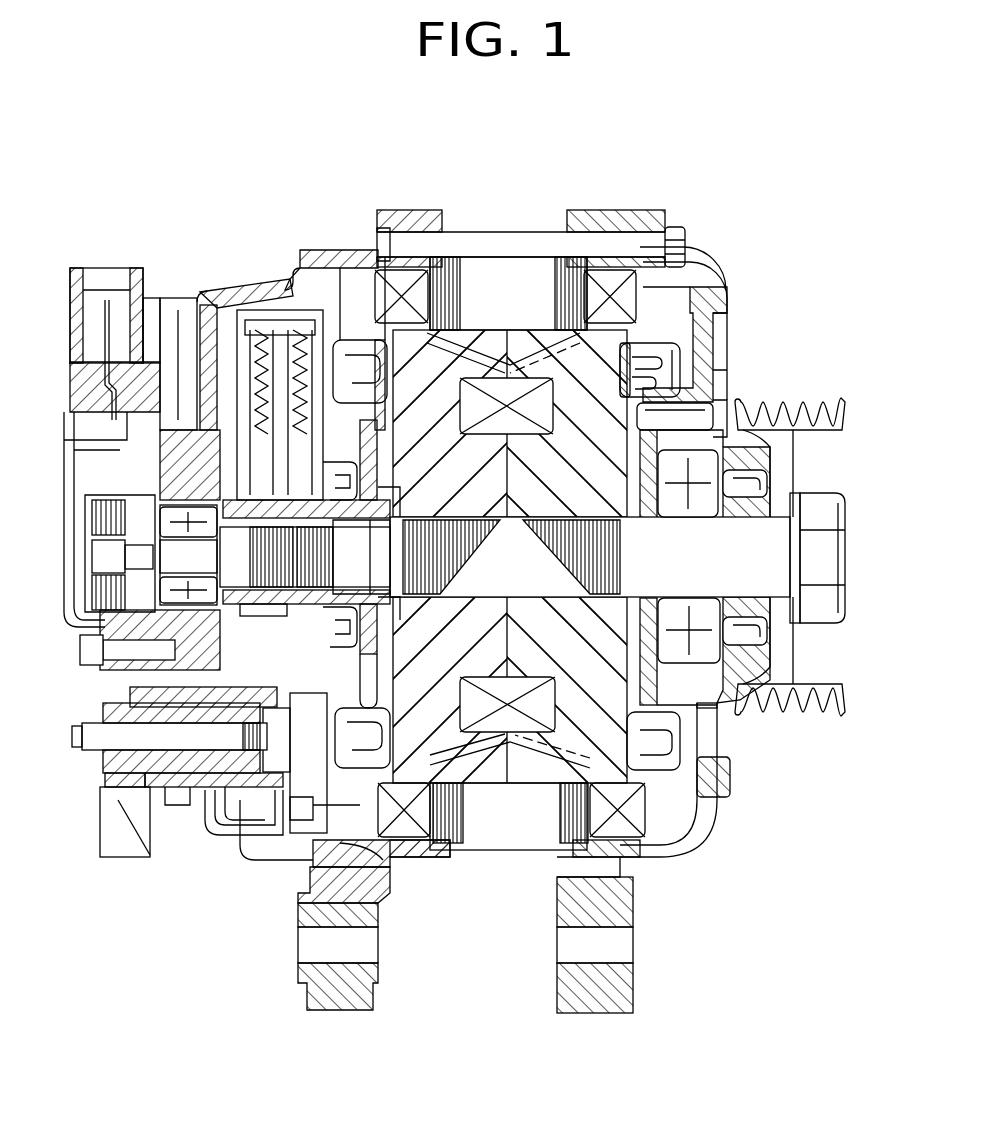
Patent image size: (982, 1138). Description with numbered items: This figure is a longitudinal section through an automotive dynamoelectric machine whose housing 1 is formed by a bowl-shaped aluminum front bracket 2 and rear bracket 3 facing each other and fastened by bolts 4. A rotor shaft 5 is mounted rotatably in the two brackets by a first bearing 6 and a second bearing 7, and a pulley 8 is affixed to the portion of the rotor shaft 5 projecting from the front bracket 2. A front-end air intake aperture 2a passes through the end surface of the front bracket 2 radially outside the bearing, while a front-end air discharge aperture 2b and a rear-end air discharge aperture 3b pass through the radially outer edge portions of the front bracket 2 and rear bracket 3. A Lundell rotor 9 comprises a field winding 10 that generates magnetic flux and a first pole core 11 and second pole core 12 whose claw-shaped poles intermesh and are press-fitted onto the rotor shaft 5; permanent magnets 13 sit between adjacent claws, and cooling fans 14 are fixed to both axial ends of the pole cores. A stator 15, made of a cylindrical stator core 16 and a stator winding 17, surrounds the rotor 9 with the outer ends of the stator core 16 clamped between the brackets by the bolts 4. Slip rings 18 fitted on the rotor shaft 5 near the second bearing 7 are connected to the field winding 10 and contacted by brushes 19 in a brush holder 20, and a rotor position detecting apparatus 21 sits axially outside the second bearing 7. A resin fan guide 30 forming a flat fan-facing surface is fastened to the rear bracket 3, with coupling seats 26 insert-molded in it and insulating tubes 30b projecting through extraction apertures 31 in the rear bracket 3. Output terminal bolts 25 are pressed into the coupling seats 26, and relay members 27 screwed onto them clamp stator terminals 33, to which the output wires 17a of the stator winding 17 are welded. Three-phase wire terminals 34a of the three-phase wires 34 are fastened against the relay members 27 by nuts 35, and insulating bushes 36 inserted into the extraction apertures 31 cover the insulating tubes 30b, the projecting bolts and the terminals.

The housing 1 is at (717, 536).
The front bracket 2 is at (705, 536).
The front-end air intake aperture 2a is at (720, 370).
The front-end air discharge aperture 2b is at (700, 262).
The rear bracket 3 is at (275, 556).
The rear-end air discharge aperture 3b is at (345, 258).
The bolt 4 is at (677, 225).
The rotor shaft 5 is at (775, 570).
The first bearing 6 is at (710, 465).
The second bearing 7 is at (165, 512).
The pulley 8 is at (810, 400).
The Lundell rotor 9 is at (505, 528).
The field winding 10 is at (510, 393).
The first pole core 11 is at (573, 363).
The second pole core 12 is at (420, 350).
The permanent magnet 13 is at (470, 770).
The cooling fan 14 is at (665, 360).
The stator 15 is at (492, 605).
The stator core 16 is at (493, 840).
The stator winding 17 is at (492, 612).
The output wire 17a is at (383, 860).
The slip ring 18 is at (255, 606).
The brush 19 is at (235, 327).
The brush holder 20 is at (273, 330).
The rotor position detecting apparatus 21 is at (85, 527).
The output terminal bolt 25 is at (82, 722).
The coupling seat 26 is at (253, 703).
The relay member 27 is at (163, 760).
The fan guide 30 is at (255, 774).
The insulating tube 30b is at (200, 775).
The extraction aperture 31 is at (220, 795).
The stator terminal 33 is at (277, 845).
The three-phase wire 34 is at (90, 815).
The three-phase wire terminal 34a is at (108, 783).
The nut 35 is at (105, 757).
The insulating bush 36 is at (123, 690).